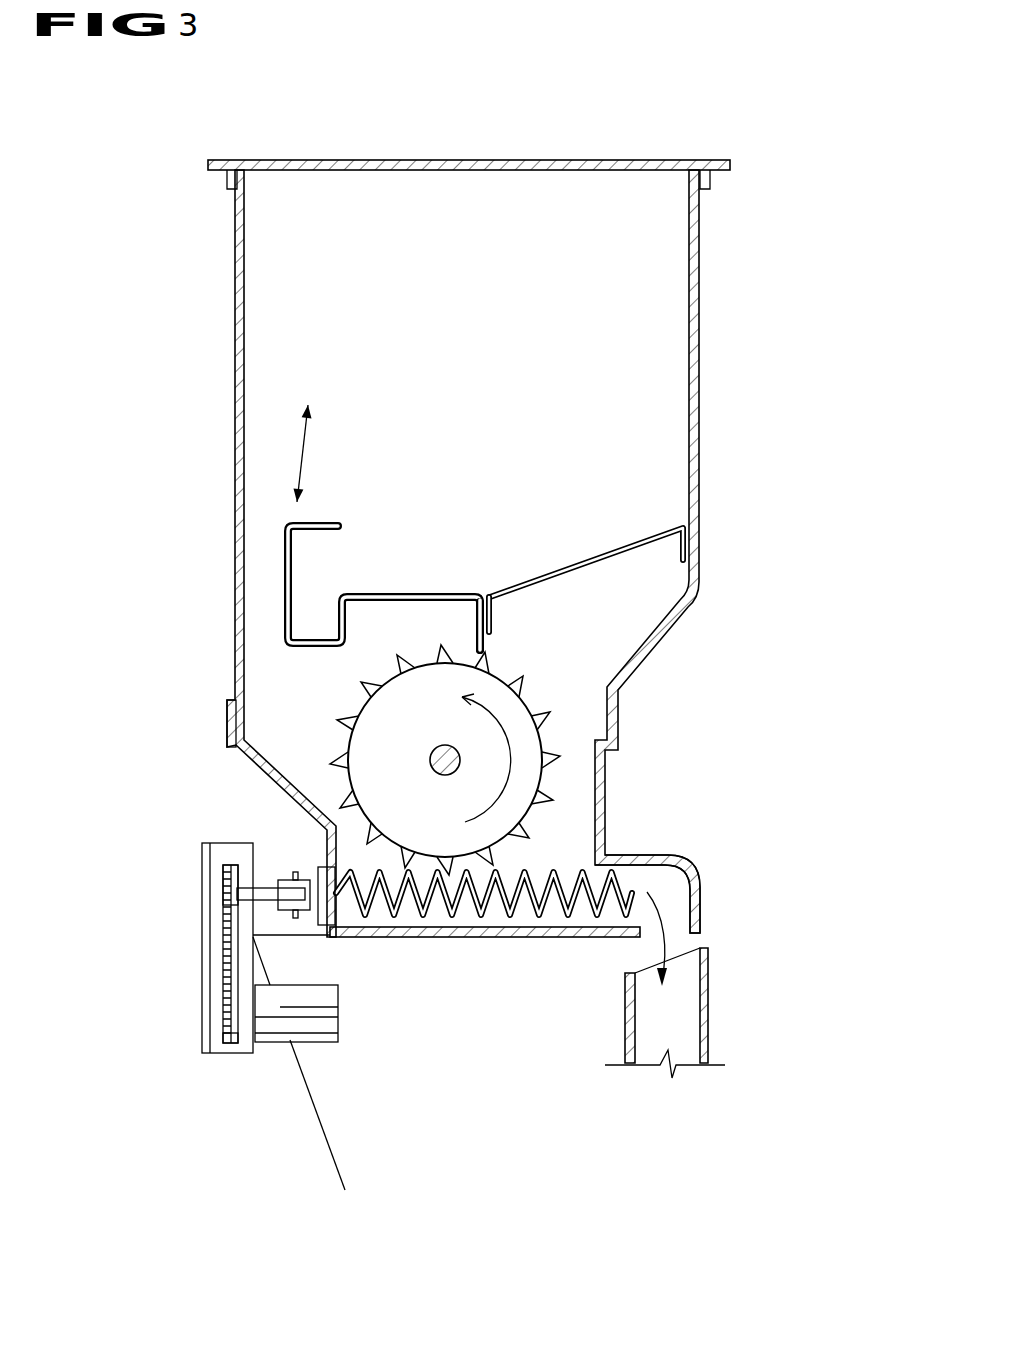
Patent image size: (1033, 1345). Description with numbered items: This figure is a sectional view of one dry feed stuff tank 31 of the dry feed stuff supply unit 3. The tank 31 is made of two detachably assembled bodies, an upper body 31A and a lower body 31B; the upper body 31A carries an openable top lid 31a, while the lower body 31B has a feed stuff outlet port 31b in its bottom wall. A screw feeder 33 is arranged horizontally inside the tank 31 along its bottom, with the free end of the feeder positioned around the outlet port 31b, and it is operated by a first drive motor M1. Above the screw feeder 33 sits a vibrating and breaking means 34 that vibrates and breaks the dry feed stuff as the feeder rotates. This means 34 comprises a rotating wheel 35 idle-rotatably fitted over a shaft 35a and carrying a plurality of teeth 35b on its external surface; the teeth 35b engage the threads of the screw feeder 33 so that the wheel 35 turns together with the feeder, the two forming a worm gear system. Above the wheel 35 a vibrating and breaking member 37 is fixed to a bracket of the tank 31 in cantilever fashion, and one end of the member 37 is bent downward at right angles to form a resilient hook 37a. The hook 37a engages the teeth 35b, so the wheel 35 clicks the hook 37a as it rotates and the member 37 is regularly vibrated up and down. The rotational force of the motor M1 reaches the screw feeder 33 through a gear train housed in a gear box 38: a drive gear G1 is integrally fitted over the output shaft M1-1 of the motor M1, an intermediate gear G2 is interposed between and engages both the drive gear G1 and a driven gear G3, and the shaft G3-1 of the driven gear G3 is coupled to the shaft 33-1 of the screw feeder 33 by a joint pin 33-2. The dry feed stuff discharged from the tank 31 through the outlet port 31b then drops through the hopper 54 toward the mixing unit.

The dry feed stuff supply unit 3 is at (802, 172).
The dry feed stuff tank 31 is at (700, 450).
The openable top lid 31a is at (590, 160).
The upper body 31A is at (236, 438).
The lower body 31B is at (225, 705).
The feed stuff outlet port 31b is at (670, 891).
The screw feeder 33 is at (447, 905).
The shaft of the screw feeder 33-1 is at (303, 884).
The joint pin 33-2 is at (280, 905).
The vibrating and breaking means 34 is at (548, 528).
The rotating wheel 35 is at (540, 737).
The shaft 35a is at (460, 766).
The teeth 35b is at (532, 685).
The vibrating and breaking member 37 is at (388, 590).
The resilient hook 37a is at (478, 630).
The gear box 38 is at (202, 868).
The hopper 54 is at (708, 998).
The drive gear G1 is at (225, 1005).
The intermediate gear G2 is at (225, 938).
The driven gear G3 is at (237, 893).
The shaft of the driven gear G3-1 is at (298, 905).
The first drive motor M1 is at (290, 1042).
The output shaft M1-1 is at (232, 1045).